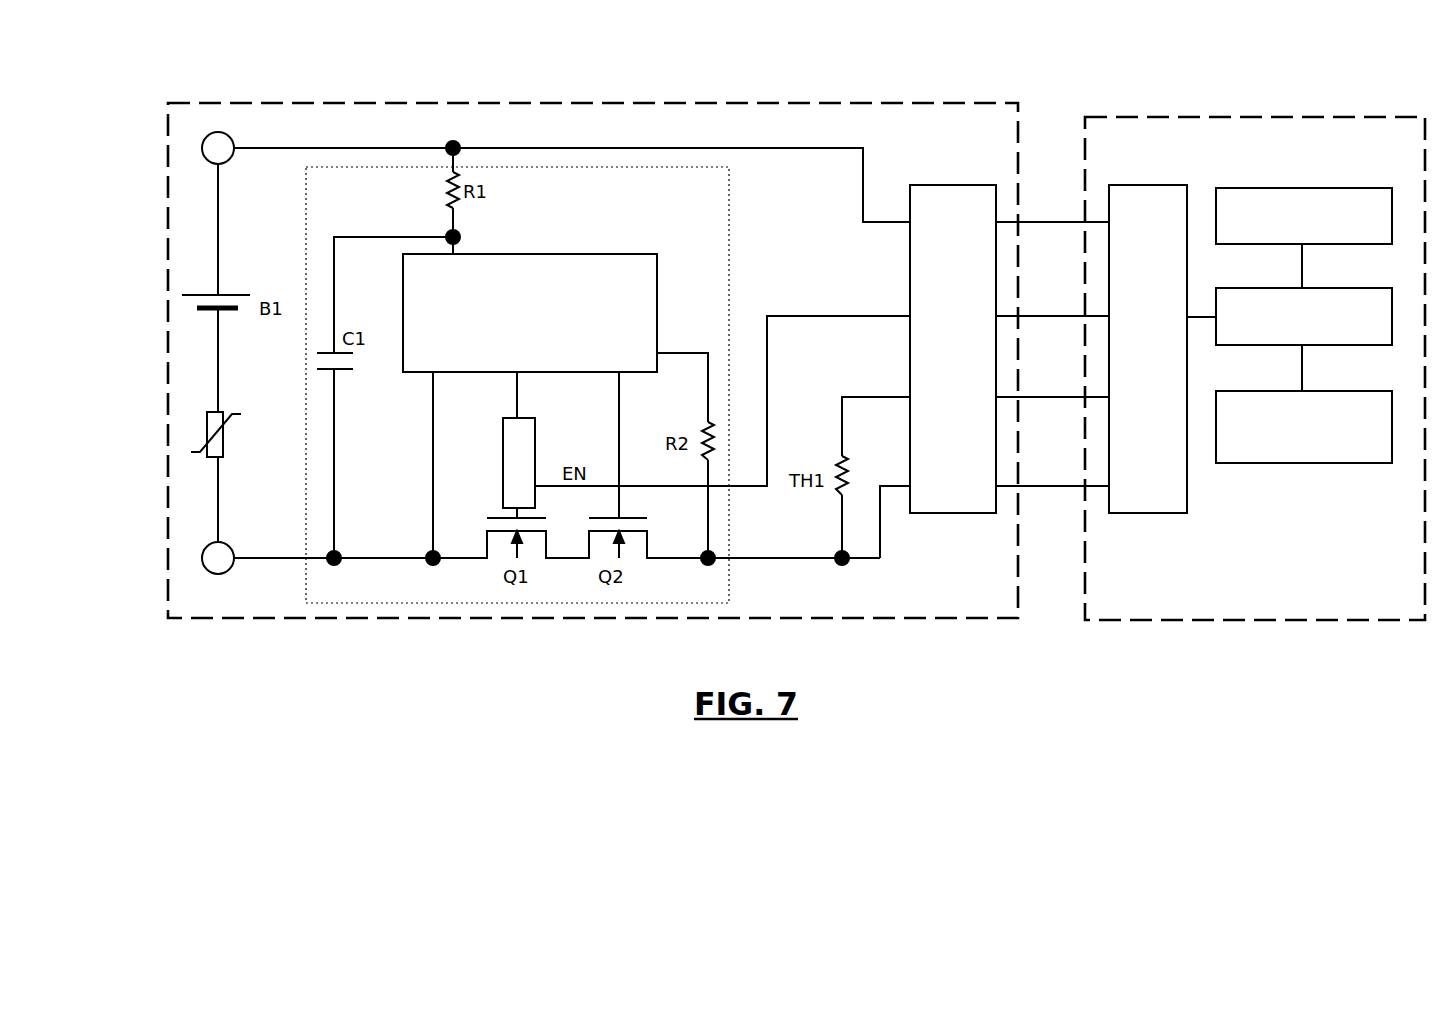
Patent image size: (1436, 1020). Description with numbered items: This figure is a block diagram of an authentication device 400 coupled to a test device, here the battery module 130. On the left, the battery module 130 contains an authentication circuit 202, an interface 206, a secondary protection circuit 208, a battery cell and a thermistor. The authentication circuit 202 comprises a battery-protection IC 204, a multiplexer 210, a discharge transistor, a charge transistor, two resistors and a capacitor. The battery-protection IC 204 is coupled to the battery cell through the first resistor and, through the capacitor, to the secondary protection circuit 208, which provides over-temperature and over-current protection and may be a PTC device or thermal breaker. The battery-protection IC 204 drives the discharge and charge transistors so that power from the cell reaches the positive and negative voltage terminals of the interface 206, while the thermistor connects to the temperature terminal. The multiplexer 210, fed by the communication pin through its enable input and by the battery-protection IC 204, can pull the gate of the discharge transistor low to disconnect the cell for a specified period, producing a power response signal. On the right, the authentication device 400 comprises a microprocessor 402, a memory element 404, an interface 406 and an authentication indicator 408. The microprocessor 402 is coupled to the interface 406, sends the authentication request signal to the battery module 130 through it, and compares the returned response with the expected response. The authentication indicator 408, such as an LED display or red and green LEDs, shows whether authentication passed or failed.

The battery module 130 is at (942, 103).
The authentication circuit 202 is at (732, 258).
The battery-protection IC 204 is at (537, 254).
The interface 206 is at (932, 185).
The secondary protection circuit 208 is at (230, 440).
The multiplexer 210 is at (537, 435).
The authentication device 400 is at (1348, 117).
The microprocessor 402 is at (1333, 288).
The memory element 404 is at (1333, 188).
The interface 406 is at (1156, 185).
The authentication indicator 408 is at (1340, 391).